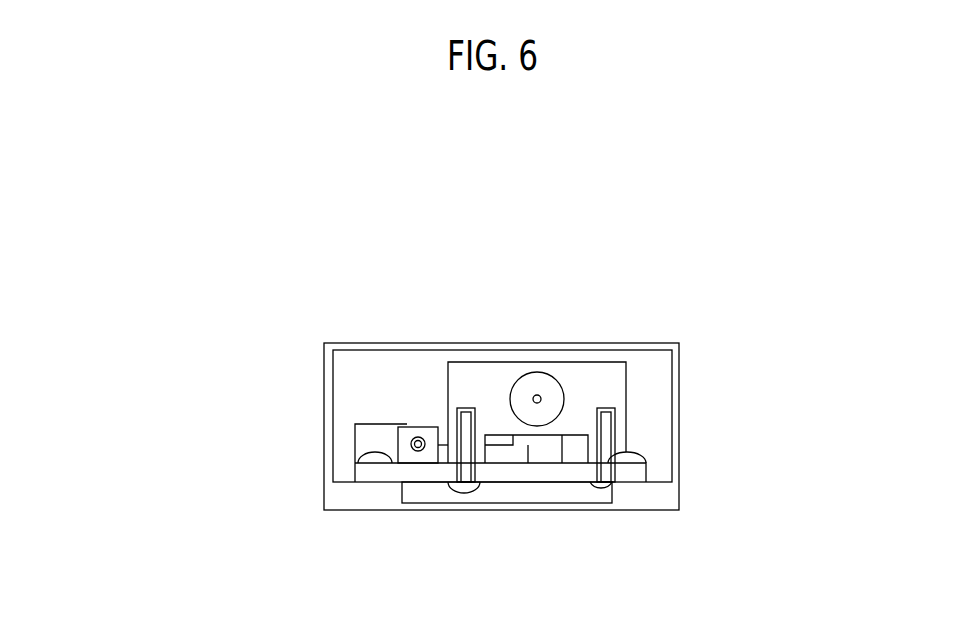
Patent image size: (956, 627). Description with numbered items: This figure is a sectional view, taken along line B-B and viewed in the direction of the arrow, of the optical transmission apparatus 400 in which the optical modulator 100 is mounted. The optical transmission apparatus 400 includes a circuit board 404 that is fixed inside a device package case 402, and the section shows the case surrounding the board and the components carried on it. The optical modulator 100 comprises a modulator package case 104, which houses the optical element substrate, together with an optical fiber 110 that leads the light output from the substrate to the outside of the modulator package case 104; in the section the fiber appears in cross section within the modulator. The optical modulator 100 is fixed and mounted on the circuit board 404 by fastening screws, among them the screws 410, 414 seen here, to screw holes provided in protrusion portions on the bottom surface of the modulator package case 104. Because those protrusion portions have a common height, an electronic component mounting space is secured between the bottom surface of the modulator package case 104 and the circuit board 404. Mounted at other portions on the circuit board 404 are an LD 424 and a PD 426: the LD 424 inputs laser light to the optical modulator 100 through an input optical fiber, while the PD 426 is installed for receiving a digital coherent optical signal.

The optical transmission apparatus 400 is at (308, 134).
The device package case 402 is at (590, 343).
The circuit board 404 is at (398, 472).
The screw 410 is at (603, 487).
The screw 414 is at (465, 487).
The LD (Laser Diode) 424 is at (362, 434).
The PD (Photo Diode) 426 is at (430, 430).
The optical modulator 100 is at (615, 395).
The modulator package case 104 is at (611, 377).
The optical fiber 110 is at (537, 399).